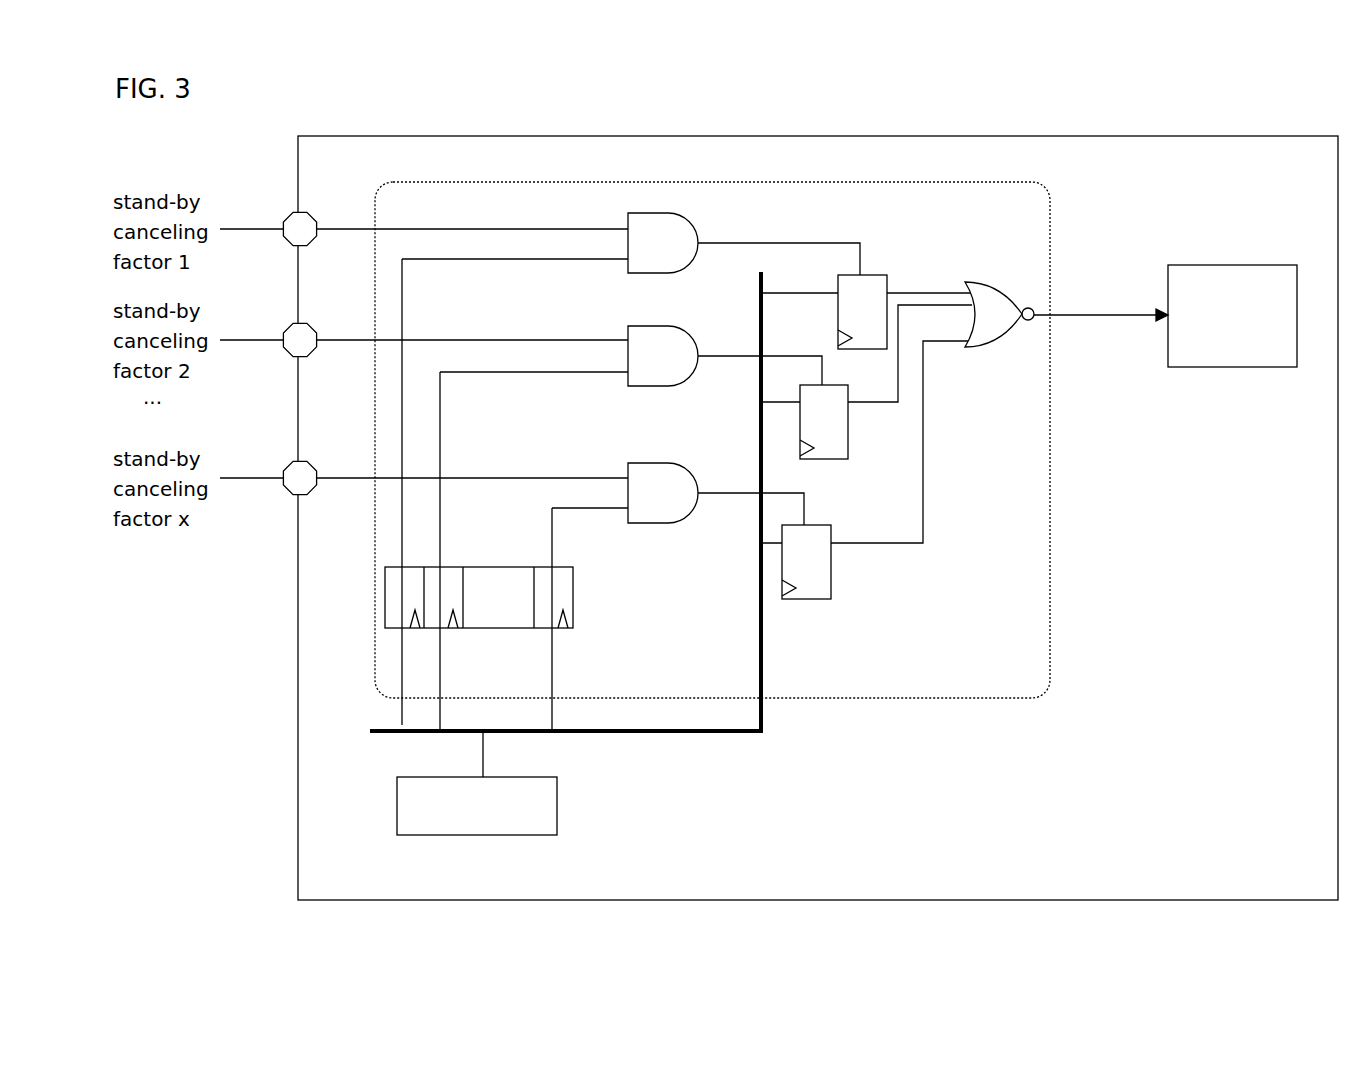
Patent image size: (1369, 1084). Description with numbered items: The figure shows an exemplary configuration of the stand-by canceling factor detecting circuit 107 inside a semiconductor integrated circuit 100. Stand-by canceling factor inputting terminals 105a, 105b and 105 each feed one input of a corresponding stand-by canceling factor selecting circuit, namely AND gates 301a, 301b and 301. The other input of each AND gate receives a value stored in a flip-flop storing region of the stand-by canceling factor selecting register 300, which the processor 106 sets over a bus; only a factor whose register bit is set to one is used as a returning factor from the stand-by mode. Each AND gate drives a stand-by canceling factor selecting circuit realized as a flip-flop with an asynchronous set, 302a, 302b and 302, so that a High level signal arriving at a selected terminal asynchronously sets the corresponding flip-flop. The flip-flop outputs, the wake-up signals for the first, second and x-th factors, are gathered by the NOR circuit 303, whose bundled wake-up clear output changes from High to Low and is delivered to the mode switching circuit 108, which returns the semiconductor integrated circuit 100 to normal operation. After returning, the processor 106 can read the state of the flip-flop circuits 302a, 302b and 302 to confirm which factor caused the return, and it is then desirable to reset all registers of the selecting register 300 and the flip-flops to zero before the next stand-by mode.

The semiconductor integrated circuit 100 is at (296, 798).
The stand-by canceling factor inputting terminal 105 is at (284, 491).
The stand-by canceling factor inputting terminal 105a is at (291, 216).
The stand-by canceling factor inputting terminal 105b is at (284, 352).
The processor 106 is at (557, 795).
The stand-by canceling factor detecting circuit 107 is at (641, 183).
The mode switching circuit 108 is at (1195, 367).
The stand-by canceling factor selecting register 300 is at (573, 603).
The stand-by canceling factor selecting circuit (AND gate) 301 is at (660, 488).
The stand-by canceling factor selecting circuit (AND gate) 301a is at (663, 223).
The stand-by canceling factor selecting circuit (AND gate) 301b is at (648, 358).
The stand-by canceling factor selecting circuit (FF circuit with asynchronous set) 302 is at (818, 593).
The stand-by canceling factor selecting circuit (FF circuit with asynchronous set) 302a is at (872, 288).
The stand-by canceling factor selecting circuit (FF circuit with asynchronous set) 302b is at (840, 455).
The NOR circuit 303 is at (990, 338).